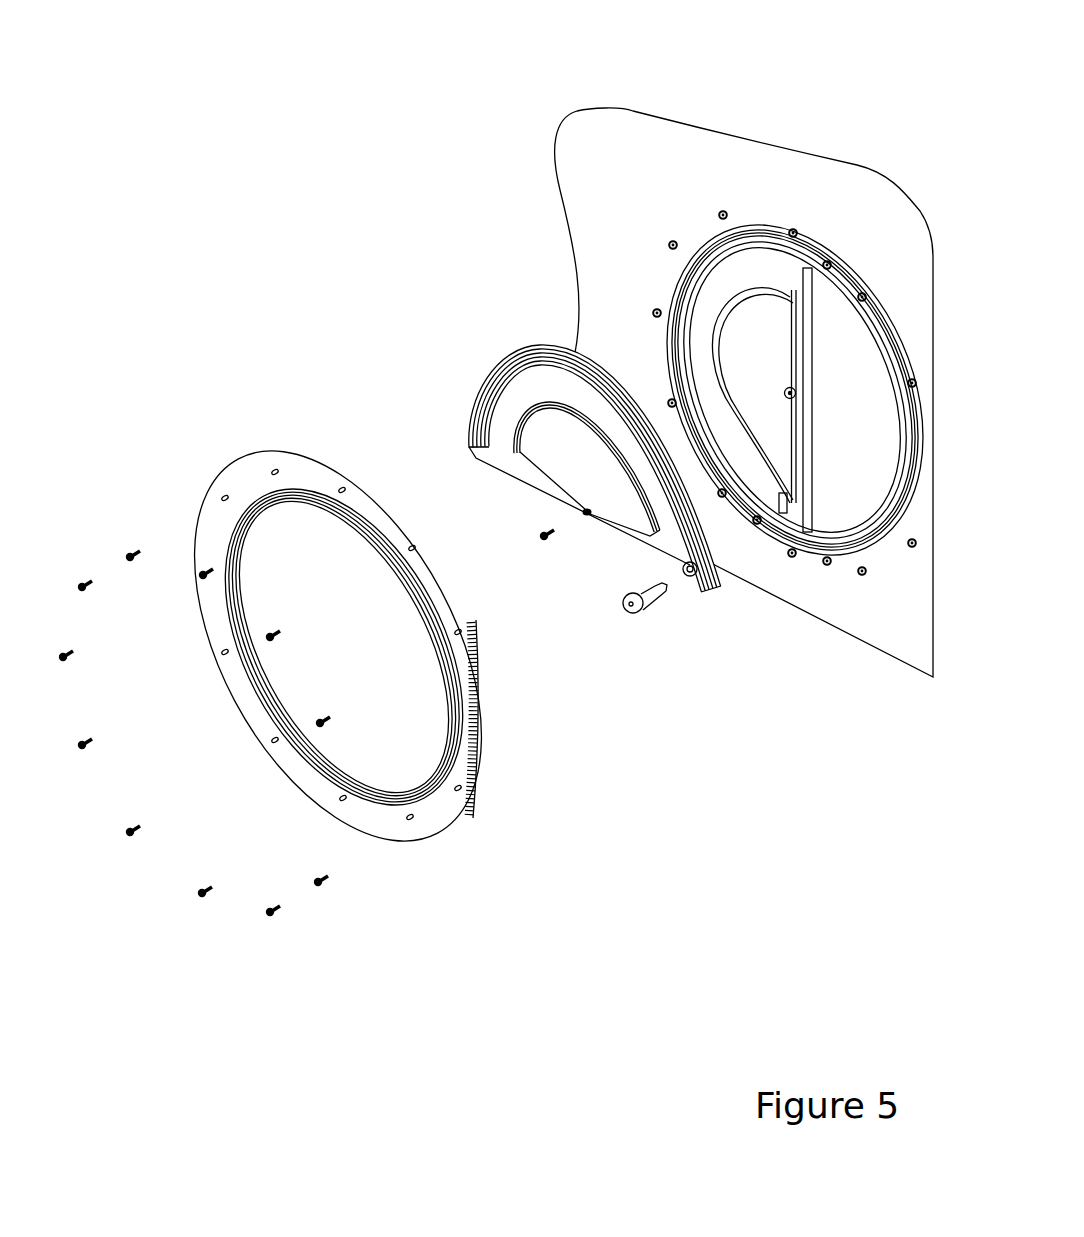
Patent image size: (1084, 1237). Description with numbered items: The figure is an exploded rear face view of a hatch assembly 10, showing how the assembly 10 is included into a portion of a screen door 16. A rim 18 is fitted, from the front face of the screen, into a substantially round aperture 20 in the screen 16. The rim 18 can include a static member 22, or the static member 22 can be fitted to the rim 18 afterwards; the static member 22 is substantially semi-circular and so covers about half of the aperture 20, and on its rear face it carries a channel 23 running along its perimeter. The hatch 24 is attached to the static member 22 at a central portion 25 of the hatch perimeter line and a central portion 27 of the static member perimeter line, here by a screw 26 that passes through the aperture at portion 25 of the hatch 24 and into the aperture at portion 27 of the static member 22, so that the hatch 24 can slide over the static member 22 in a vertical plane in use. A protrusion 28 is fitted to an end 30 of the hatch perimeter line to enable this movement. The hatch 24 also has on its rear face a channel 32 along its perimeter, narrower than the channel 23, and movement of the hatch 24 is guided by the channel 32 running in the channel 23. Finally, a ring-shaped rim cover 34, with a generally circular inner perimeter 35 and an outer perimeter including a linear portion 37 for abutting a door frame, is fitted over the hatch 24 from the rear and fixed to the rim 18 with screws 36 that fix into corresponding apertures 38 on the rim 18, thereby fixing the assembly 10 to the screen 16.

The hatch assembly 10 is at (283, 247).
The screen door 16 is at (598, 163).
The rim 18 is at (823, 265).
The aperture 20 is at (845, 345).
The static member 22 is at (770, 267).
The channel 23 is at (705, 307).
The hatch 24 is at (495, 387).
The central portion 25 is at (580, 512).
The screw 26 is at (547, 541).
The central portion 27 is at (784, 393).
The protrusion 28 is at (640, 612).
The end 30 is at (692, 585).
The channel 32 is at (498, 422).
The rim cover 34 is at (445, 820).
The inner perimeter 35 is at (257, 503).
The screws 36 is at (276, 912).
The linear portion 37 is at (472, 758).
The apertures 38 is at (790, 556).